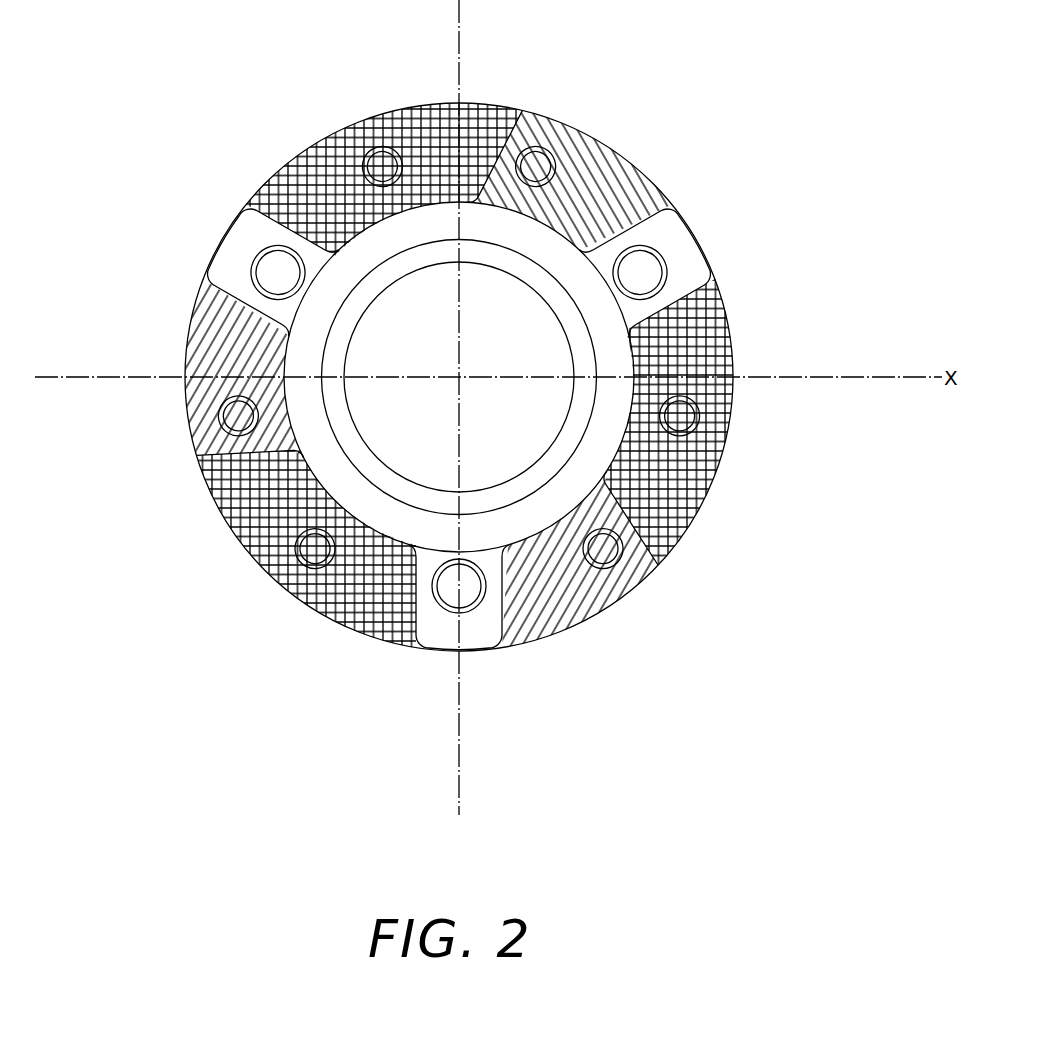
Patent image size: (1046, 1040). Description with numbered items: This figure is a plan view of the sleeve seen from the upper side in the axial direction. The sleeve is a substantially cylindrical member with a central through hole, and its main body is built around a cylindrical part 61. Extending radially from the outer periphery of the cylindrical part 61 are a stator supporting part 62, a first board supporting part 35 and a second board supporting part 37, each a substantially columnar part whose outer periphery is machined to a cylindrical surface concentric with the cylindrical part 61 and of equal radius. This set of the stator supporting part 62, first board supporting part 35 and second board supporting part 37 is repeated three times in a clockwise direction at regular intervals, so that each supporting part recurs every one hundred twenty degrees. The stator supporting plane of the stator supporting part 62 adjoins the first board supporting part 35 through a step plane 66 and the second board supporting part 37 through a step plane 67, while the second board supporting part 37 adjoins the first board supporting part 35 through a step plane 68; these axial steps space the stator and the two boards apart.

The first board supporting part 35 is at (715, 394).
The second board supporting part 37 is at (570, 597).
The cylindrical part 61 is at (598, 440).
The stator supporting part 62 is at (700, 245).
The step plane 66 is at (710, 318).
The step plane 67 is at (645, 218).
The step plane 68 is at (638, 522).